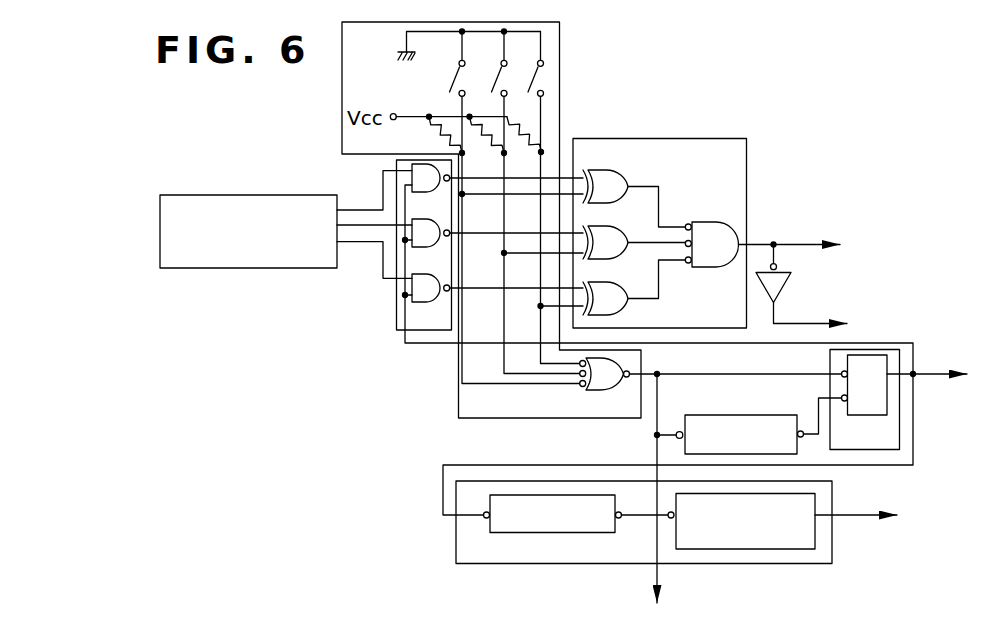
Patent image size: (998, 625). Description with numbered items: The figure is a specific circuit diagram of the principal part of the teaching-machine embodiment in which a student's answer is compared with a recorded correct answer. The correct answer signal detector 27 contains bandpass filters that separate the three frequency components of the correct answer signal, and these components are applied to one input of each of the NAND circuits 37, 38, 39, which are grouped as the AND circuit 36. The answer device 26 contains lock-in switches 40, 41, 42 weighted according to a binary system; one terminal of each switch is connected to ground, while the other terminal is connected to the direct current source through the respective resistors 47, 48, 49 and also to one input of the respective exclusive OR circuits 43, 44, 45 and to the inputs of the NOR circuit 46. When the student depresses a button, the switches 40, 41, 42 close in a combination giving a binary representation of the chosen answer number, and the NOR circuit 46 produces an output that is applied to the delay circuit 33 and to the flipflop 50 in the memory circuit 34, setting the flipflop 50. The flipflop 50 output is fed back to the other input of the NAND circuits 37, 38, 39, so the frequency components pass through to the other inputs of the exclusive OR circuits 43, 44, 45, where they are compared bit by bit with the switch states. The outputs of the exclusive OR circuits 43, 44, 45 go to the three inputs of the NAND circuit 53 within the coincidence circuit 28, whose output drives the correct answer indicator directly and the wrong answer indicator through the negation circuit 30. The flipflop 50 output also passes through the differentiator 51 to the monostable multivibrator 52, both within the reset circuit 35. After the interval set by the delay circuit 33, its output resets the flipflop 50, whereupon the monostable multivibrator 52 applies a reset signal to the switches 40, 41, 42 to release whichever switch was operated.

The answer device 26 is at (560, 114).
The correct answer signal detector 27 is at (298, 268).
The coincidence circuit 28 is at (686, 138).
The negation circuit 30 is at (781, 283).
The delay circuit 33 is at (753, 415).
The memory circuit 34 is at (856, 350).
The reset circuit 35 is at (502, 564).
The AND circuit 36 is at (396, 305).
The NAND circuit 37 is at (417, 193).
The NAND circuit 38 is at (417, 248).
The NAND circuit 39 is at (417, 303).
The lock-in switch 40 is at (455, 81).
The lock-in switch 41 is at (495, 82).
The lock-in switch 42 is at (534, 75).
The exclusive OR circuit 43 is at (605, 170).
The exclusive OR circuit 44 is at (606, 226).
The exclusive OR circuit 45 is at (611, 282).
The NOR circuit 46 is at (606, 380).
The resistor 47 is at (436, 130).
The resistor 48 is at (478, 146).
The resistor 49 is at (521, 146).
The flipflop 50 is at (857, 415).
The differentiator 51 is at (607, 533).
The monostable multivibrator 52 is at (813, 536).
The NAND circuit 53 is at (705, 222).